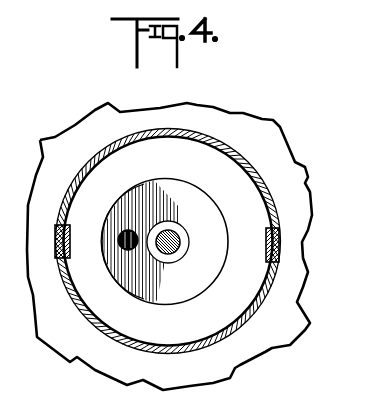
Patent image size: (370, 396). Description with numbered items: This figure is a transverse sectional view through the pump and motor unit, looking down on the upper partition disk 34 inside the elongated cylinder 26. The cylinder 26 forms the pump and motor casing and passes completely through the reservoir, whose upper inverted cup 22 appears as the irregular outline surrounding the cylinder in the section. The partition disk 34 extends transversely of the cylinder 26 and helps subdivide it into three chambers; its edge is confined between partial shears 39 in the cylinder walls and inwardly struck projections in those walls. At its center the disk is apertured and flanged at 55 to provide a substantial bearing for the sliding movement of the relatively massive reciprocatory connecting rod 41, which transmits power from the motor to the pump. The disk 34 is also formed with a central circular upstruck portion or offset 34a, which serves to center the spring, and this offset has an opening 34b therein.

The upper inverted cup 22 is at (250, 352).
The elongated cylinder 26 is at (213, 138).
The partial shears 39 is at (279, 247).
The upper partition disk 34 is at (245, 293).
The central circular upstruck portion or offset 34a is at (170, 290).
The opening 34b is at (126, 245).
The apertured and flanged center 55 is at (184, 252).
The reciprocatory connecting rod 41 is at (181, 238).